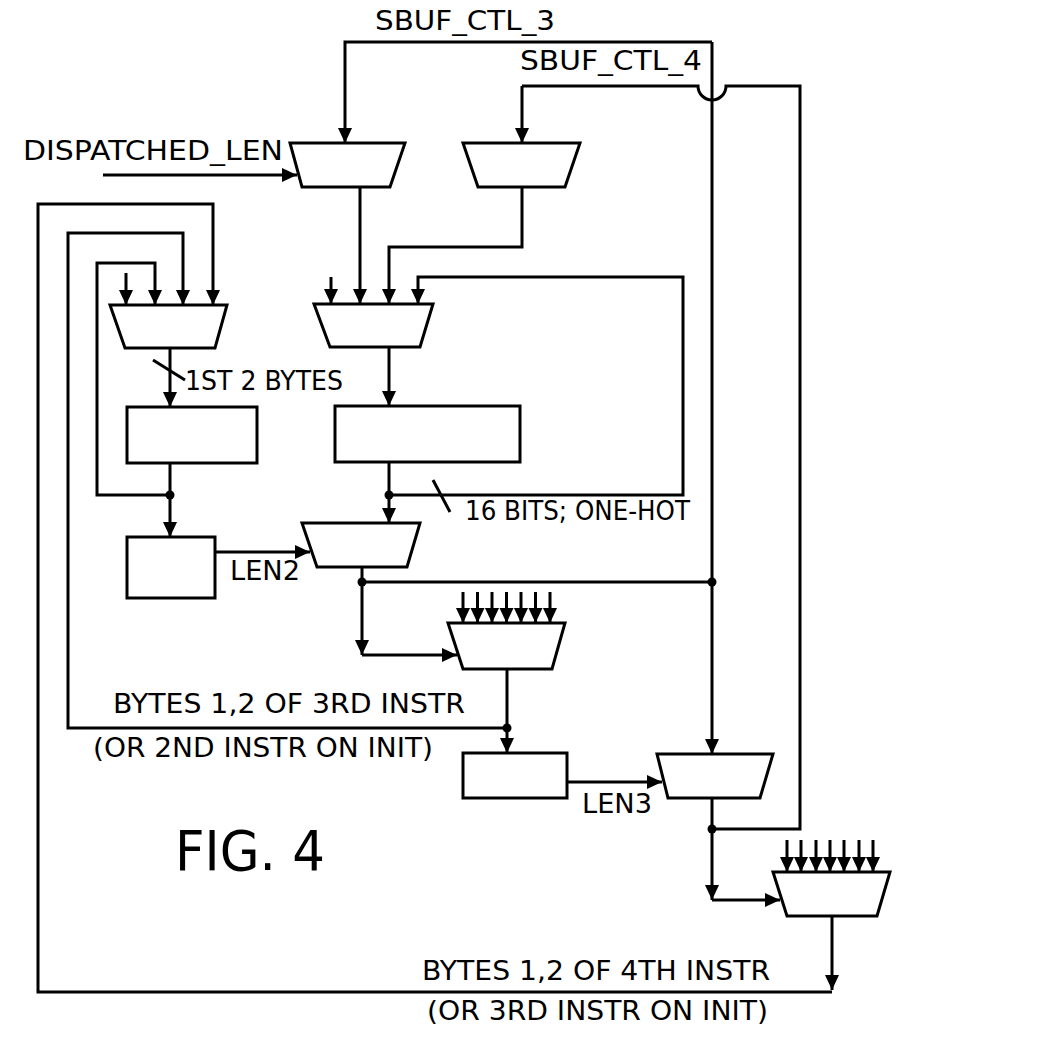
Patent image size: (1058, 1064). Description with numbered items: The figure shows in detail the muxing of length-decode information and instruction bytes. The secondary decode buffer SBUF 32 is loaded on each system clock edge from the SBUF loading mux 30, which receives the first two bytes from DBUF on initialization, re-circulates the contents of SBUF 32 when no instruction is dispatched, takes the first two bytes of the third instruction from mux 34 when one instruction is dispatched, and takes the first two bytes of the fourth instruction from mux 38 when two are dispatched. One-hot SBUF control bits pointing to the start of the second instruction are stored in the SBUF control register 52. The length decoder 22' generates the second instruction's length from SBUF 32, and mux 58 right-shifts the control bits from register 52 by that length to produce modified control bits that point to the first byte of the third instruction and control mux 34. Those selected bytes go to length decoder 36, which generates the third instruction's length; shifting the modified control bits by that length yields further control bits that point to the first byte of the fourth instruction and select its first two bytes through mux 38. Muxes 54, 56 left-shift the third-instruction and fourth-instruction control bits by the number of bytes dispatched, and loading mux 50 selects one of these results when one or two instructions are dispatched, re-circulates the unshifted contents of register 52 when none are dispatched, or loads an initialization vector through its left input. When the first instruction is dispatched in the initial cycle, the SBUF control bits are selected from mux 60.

The mux 54 is at (405, 145).
The mux 56 is at (580, 145).
The SBUF loading mux 30 is at (227, 307).
The loading mux 50 is at (433, 306).
The secondary decode buffer SBUF 32 is at (257, 425).
The SBUF control register 52 is at (520, 425).
The length decoder 22' is at (198, 549).
The mux 58 is at (420, 525).
The mux 34 is at (565, 625).
The mux 60 is at (657, 754).
The length decoder 36 is at (492, 798).
The mux 38 is at (890, 874).